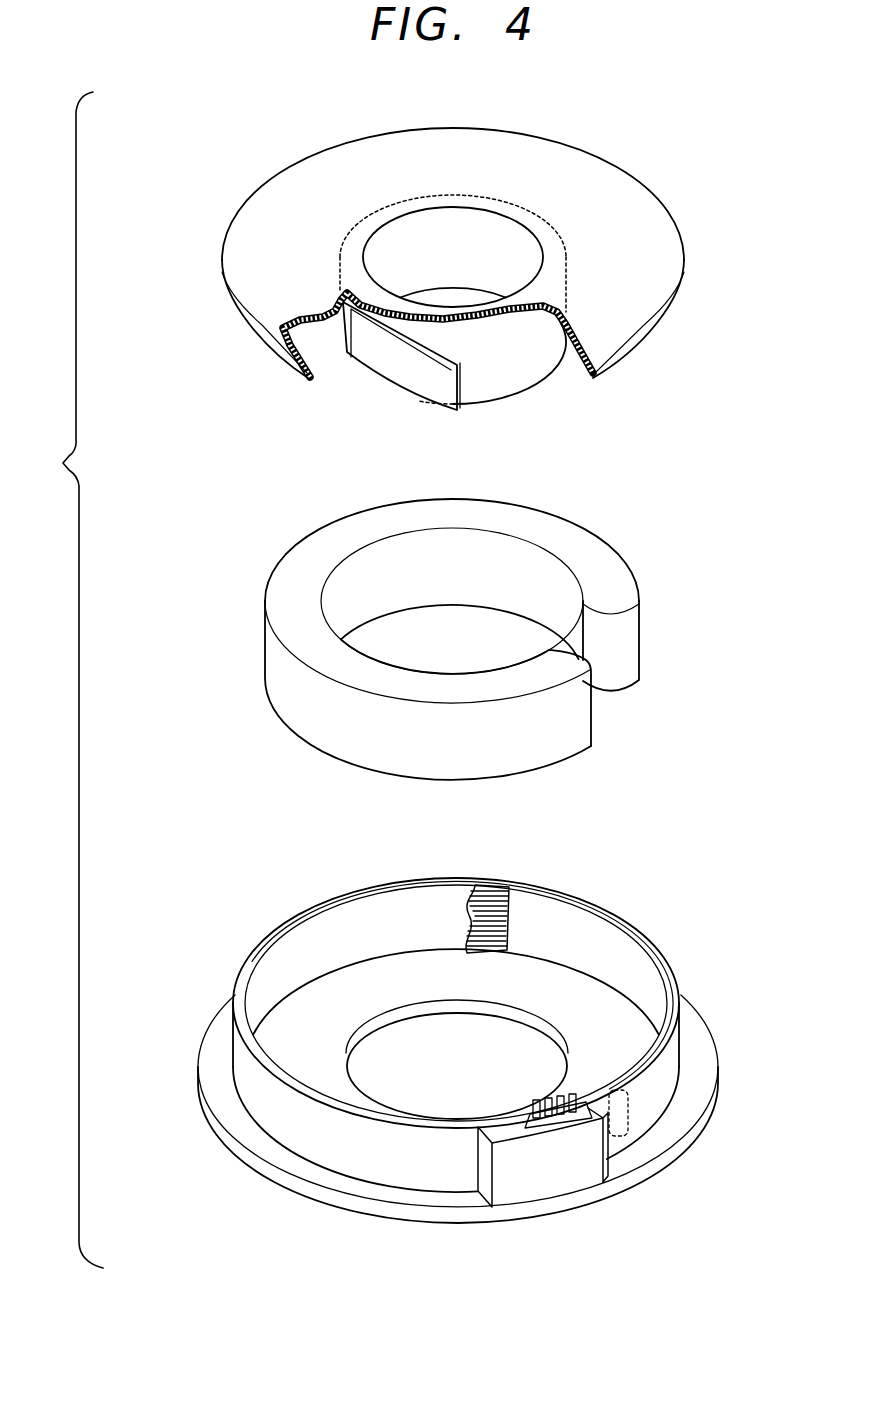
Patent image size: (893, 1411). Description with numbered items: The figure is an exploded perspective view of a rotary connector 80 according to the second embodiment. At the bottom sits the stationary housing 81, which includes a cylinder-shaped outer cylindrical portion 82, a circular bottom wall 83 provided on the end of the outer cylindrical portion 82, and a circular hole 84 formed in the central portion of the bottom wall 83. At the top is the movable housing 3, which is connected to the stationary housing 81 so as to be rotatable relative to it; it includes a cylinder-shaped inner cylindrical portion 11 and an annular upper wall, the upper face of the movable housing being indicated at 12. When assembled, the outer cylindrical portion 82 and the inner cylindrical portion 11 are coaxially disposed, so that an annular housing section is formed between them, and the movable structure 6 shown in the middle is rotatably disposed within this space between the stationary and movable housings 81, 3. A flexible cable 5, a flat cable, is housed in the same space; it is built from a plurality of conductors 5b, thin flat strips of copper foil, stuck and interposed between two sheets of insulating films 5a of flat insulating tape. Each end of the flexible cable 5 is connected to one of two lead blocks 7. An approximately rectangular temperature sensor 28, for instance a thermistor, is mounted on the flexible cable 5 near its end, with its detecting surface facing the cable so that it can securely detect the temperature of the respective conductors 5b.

The movable housing 3 is at (489, 265).
The top surface 12 is at (650, 240).
The inner cylindrical portion 11 is at (537, 362).
The flexible cable 5 is at (438, 405).
The insulating films 5a is at (545, 932).
The conductors 5b is at (490, 910).
The movable structure 6 is at (593, 552).
The lead blocks 7 is at (577, 1125).
The temperature sensor 28 is at (627, 1113).
The rotary connector 80 is at (187, 457).
The stationary housing 81 is at (464, 1037).
The outer cylindrical portion 82 is at (243, 1057).
The bottom wall 83 is at (328, 990).
The circular hole 84 is at (400, 1043).